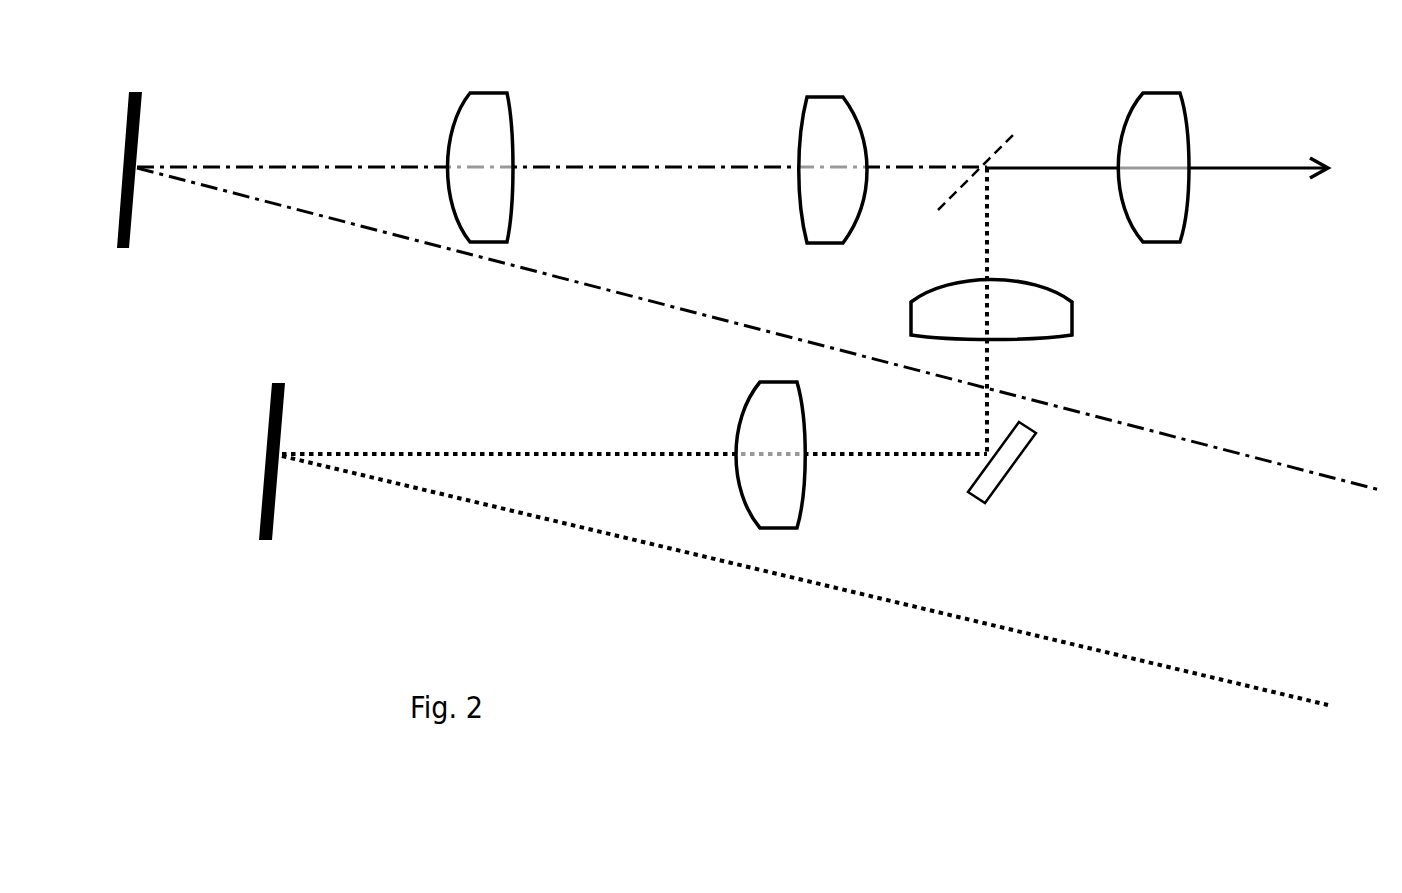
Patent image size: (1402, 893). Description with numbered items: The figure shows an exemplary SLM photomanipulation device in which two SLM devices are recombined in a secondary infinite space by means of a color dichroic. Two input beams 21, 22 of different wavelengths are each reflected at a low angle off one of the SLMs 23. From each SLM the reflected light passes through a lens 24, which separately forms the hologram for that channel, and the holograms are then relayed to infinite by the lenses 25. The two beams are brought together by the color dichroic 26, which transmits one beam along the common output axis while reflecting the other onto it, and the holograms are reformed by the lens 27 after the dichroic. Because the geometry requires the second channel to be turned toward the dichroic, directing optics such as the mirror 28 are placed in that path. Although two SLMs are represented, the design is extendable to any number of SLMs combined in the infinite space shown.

The input beam 21 is at (758, 357).
The input beam 22 is at (805, 604).
The SLM 23 is at (193, 349).
The lens 24 is at (627, 290).
The lens 25 is at (966, 192).
The color dichroic 26 is at (1133, 271).
The lens 27 is at (1154, 143).
The mirror 28 is at (1018, 466).